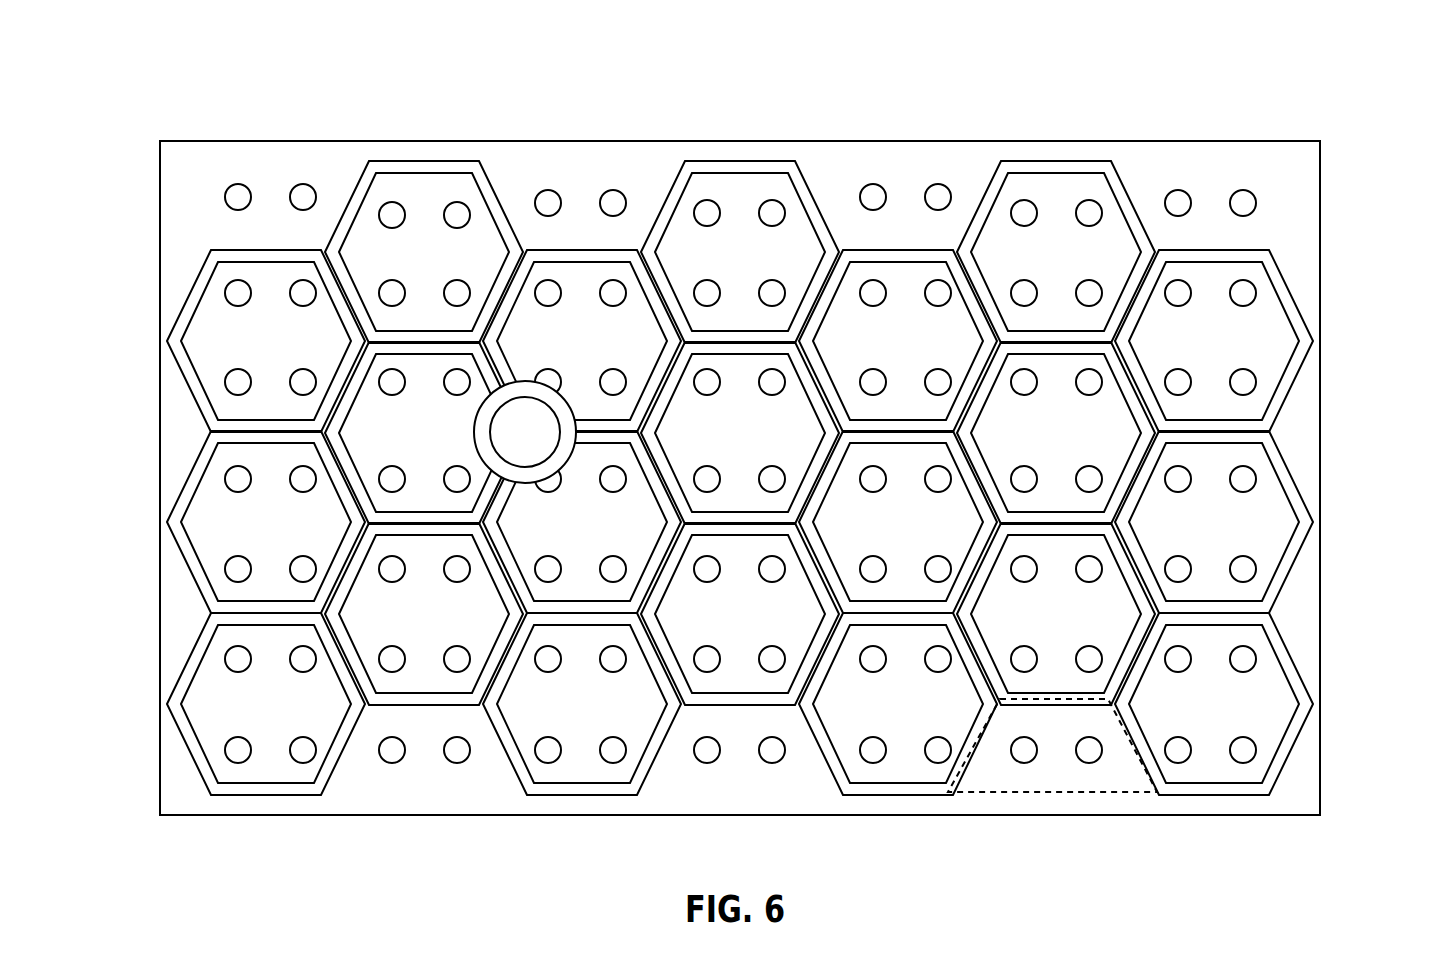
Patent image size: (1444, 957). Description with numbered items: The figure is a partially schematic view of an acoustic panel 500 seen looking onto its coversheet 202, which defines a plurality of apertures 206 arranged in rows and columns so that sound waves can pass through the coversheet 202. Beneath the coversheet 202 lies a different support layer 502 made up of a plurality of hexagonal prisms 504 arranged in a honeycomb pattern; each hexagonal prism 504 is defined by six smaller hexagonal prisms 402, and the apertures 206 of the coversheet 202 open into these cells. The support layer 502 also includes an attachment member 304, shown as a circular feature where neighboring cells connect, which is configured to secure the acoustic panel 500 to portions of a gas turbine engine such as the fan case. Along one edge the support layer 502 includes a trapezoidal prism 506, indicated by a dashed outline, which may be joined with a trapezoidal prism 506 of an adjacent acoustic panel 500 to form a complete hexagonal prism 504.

The acoustic panel 500 is at (211, 40).
The coversheet 202 is at (1096, 141).
The apertures 206 is at (385, 205).
The attachment member 304 is at (515, 384).
The hexagonal prisms 402 is at (1287, 487).
The support layer 502 is at (175, 293).
The hexagonal prism 504 is at (1273, 248).
The trapezoidal prism 506 is at (1087, 809).